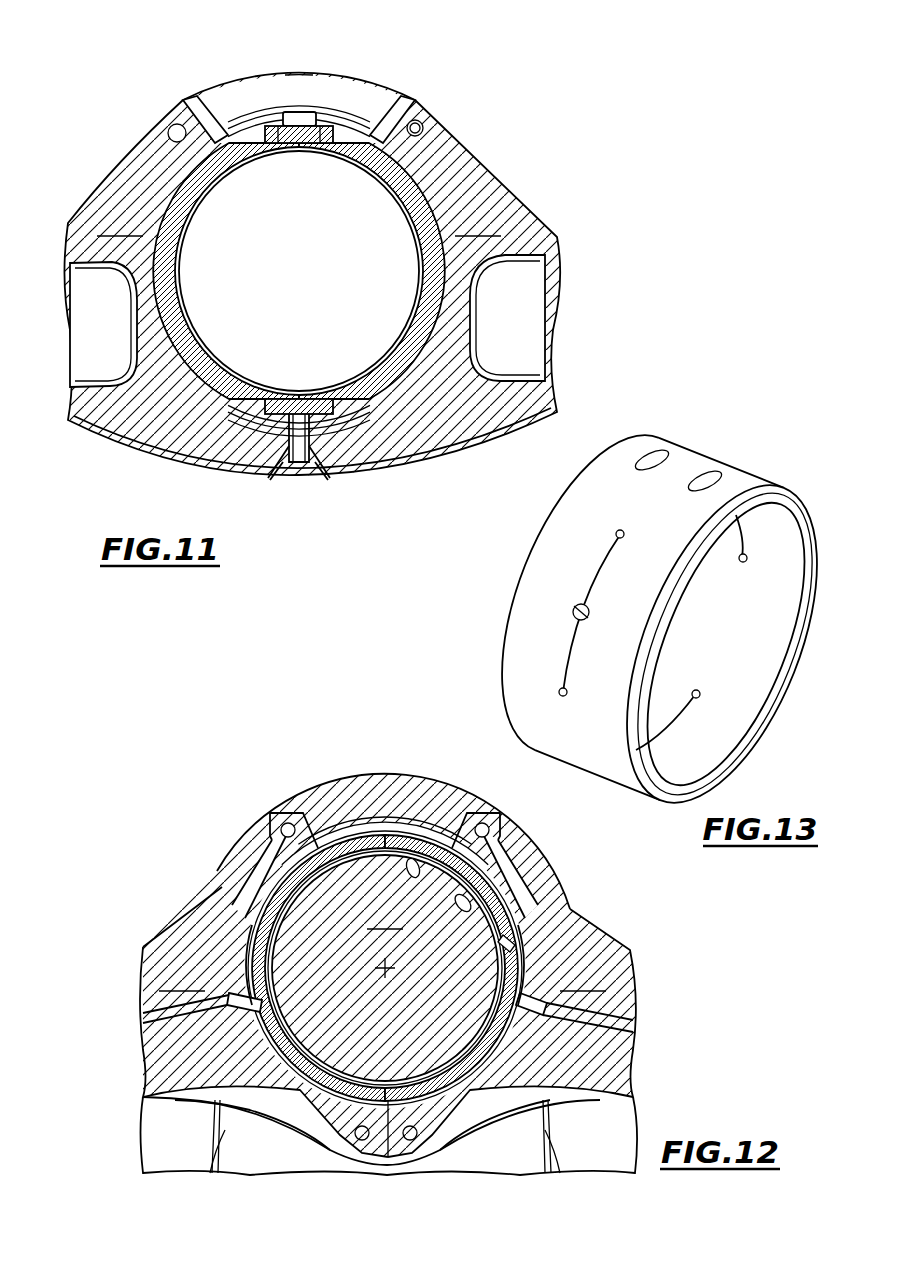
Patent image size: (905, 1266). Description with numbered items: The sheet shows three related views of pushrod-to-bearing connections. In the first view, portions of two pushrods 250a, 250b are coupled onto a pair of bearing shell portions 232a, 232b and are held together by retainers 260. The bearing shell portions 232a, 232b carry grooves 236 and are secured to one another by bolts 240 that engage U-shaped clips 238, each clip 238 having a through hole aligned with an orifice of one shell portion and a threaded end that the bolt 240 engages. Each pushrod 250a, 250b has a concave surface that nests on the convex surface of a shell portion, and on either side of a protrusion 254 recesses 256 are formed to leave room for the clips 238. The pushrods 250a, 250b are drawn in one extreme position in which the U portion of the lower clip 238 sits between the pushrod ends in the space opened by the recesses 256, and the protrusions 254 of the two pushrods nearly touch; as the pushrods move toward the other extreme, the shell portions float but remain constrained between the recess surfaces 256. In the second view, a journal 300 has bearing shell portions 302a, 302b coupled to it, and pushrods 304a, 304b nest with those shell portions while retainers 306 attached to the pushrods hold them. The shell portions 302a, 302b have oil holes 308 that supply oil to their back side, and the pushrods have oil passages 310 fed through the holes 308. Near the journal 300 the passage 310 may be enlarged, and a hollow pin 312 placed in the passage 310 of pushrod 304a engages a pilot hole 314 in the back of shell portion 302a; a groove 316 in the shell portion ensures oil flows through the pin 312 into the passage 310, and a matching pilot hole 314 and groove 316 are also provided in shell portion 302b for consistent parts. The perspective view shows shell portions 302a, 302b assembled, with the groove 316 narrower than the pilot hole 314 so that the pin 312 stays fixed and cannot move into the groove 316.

In FIG. 11, the bearing shell portion 232a is at (175, 197).
In FIG. 11, the bearing shell portion 232b is at (420, 200).
In FIG. 11, the grooves 236 is at (255, 140).
In FIG. 11, the clips 238 is at (283, 125).
In FIG. 11, the bolts 240 is at (313, 127).
In FIG. 11, the pushrod 250a is at (181, 287).
In FIG. 11, the pushrod 250b is at (429, 287).
In FIG. 11, the protrusion 254 is at (213, 130).
In FIG. 11, the recesses 256 is at (203, 110).
In FIG. 11, the retainers 260 is at (295, 78).
In FIG. 12, the journal 300 is at (385, 968).
In FIG. 13, the bearing shell portion 302a is at (600, 500).
In FIG. 12, the bearing shell portion 302a is at (347, 843).
In FIG. 13, the bearing shell portion 302b is at (743, 650).
In FIG. 12, the bearing shell portion 302b is at (430, 843).
In FIG. 12, the pushrod 304a is at (264, 985).
In FIG. 12, the pushrod 304b is at (512, 985).
In FIG. 12, the retainers 306 is at (405, 790).
In FIG. 12, the oil holes 308 is at (257, 933).
In FIG. 12, the oil passages 310 is at (215, 1010).
In FIG. 12, the hollow pin 312 is at (243, 993).
In FIG. 13, the pilot hole 314 is at (575, 607).
In FIG. 12, the pilot hole 314 is at (510, 940).
In FIG. 13, the groove 316 is at (600, 565).
In FIG. 12, the groove 316 is at (257, 967).